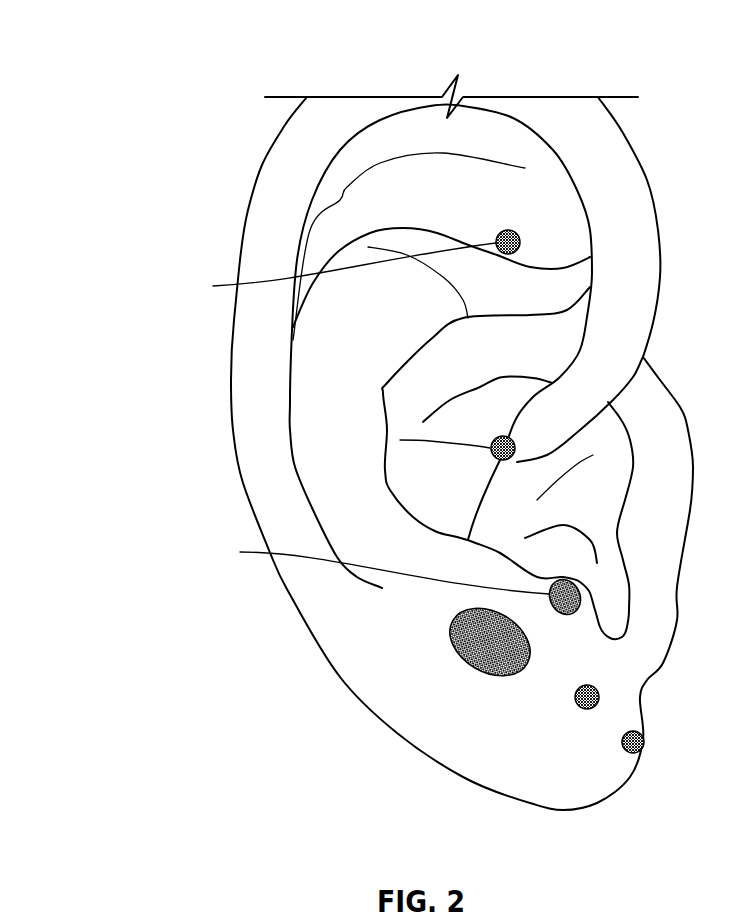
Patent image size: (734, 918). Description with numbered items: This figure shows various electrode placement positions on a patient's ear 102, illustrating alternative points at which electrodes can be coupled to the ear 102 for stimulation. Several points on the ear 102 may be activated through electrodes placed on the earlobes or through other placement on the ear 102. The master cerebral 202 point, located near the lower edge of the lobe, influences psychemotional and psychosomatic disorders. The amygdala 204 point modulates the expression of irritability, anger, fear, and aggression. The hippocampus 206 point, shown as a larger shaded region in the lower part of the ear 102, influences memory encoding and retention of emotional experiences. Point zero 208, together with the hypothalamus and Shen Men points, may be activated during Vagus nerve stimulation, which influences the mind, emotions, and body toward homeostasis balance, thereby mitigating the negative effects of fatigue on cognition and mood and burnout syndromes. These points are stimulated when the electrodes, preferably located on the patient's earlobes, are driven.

The ear 102 is at (370, 46).
The master cerebral point 202 is at (622, 741).
The amygdala point 204 is at (575, 698).
The hippocampus point 206 is at (492, 642).
The point zero 208 is at (491, 449).